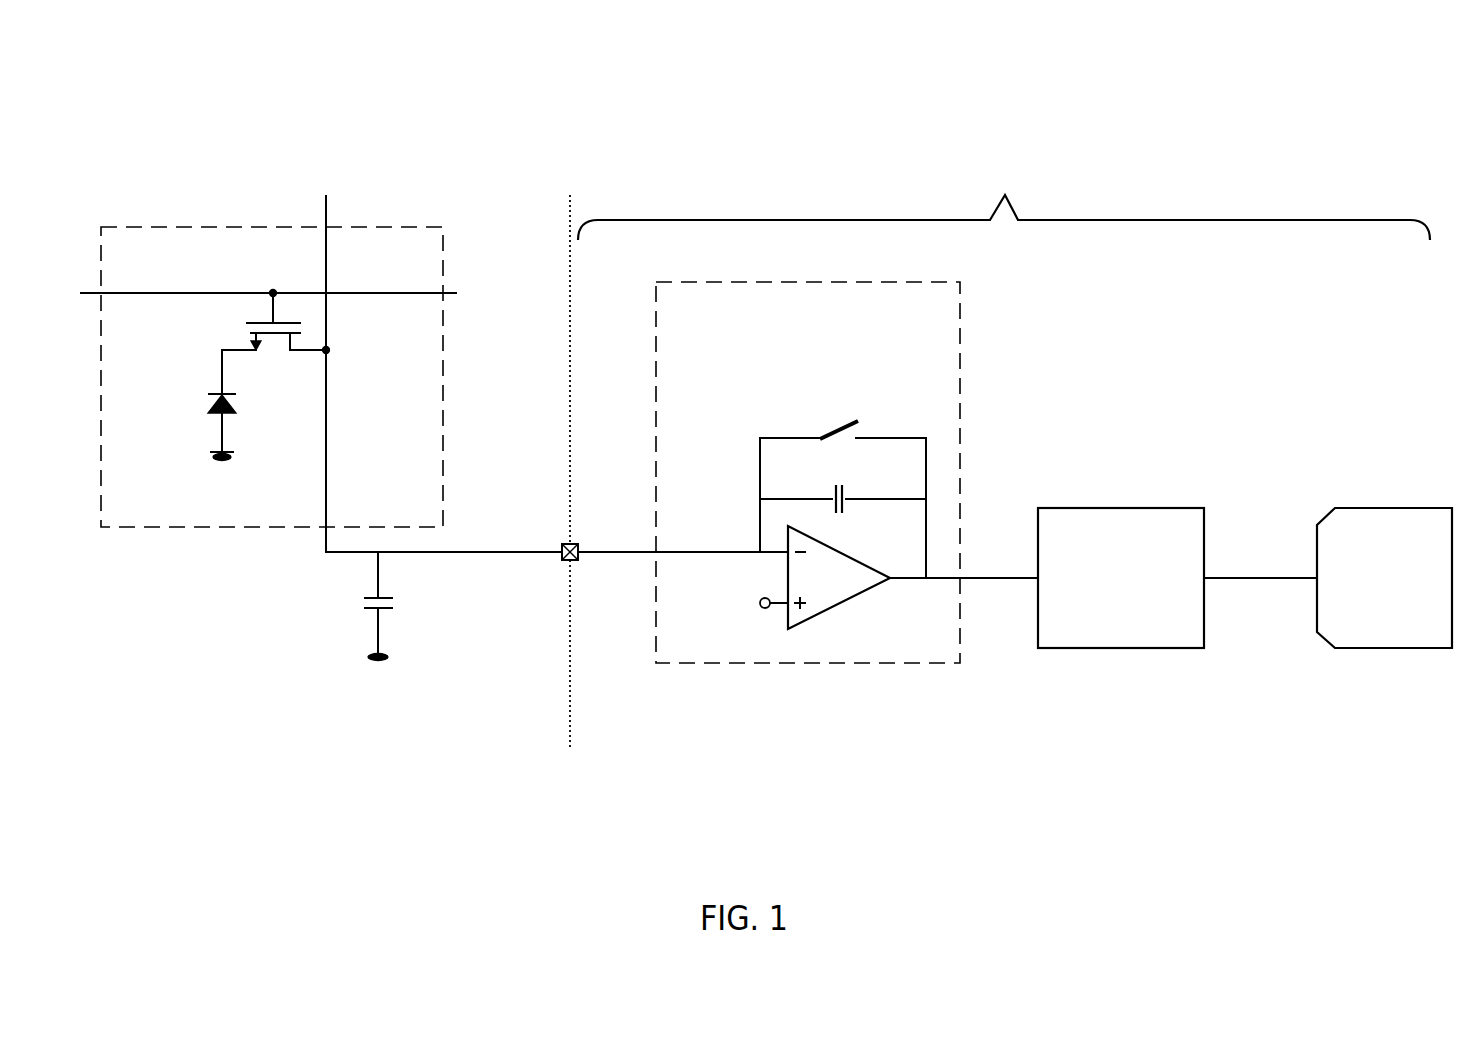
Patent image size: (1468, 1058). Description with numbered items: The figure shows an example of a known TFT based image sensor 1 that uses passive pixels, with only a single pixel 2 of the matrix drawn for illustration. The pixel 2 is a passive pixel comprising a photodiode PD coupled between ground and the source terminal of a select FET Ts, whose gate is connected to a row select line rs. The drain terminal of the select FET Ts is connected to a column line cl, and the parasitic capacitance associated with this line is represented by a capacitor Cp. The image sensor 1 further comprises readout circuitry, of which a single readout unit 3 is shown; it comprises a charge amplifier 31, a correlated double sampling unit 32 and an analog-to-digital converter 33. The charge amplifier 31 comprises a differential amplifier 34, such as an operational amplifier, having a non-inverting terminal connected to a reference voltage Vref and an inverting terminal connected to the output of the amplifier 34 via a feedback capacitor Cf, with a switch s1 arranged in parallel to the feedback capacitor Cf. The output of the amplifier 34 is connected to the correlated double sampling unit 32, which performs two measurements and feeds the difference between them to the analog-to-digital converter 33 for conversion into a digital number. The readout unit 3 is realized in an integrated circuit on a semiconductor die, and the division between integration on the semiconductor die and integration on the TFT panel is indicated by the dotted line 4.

The image sensor 1 is at (666, 52).
The pixel 2 is at (268, 379).
The readout unit 3 is at (1015, 466).
The dotted line 4 is at (560, 655).
The charge amplifier 31 is at (808, 532).
The correlated double sampling unit 32 is at (1131, 505).
The analog-to-digital converter 33 is at (1392, 505).
The differential amplifier 34 is at (838, 612).
The select FET Ts is at (289, 318).
The row select line rs is at (385, 282).
The photodiode PD is at (196, 412).
The column line cl is at (318, 498).
The capacitor Cp is at (403, 606).
The switch s1 is at (840, 418).
The feedback capacitor Cf is at (843, 508).
The reference voltage Vref is at (740, 605).